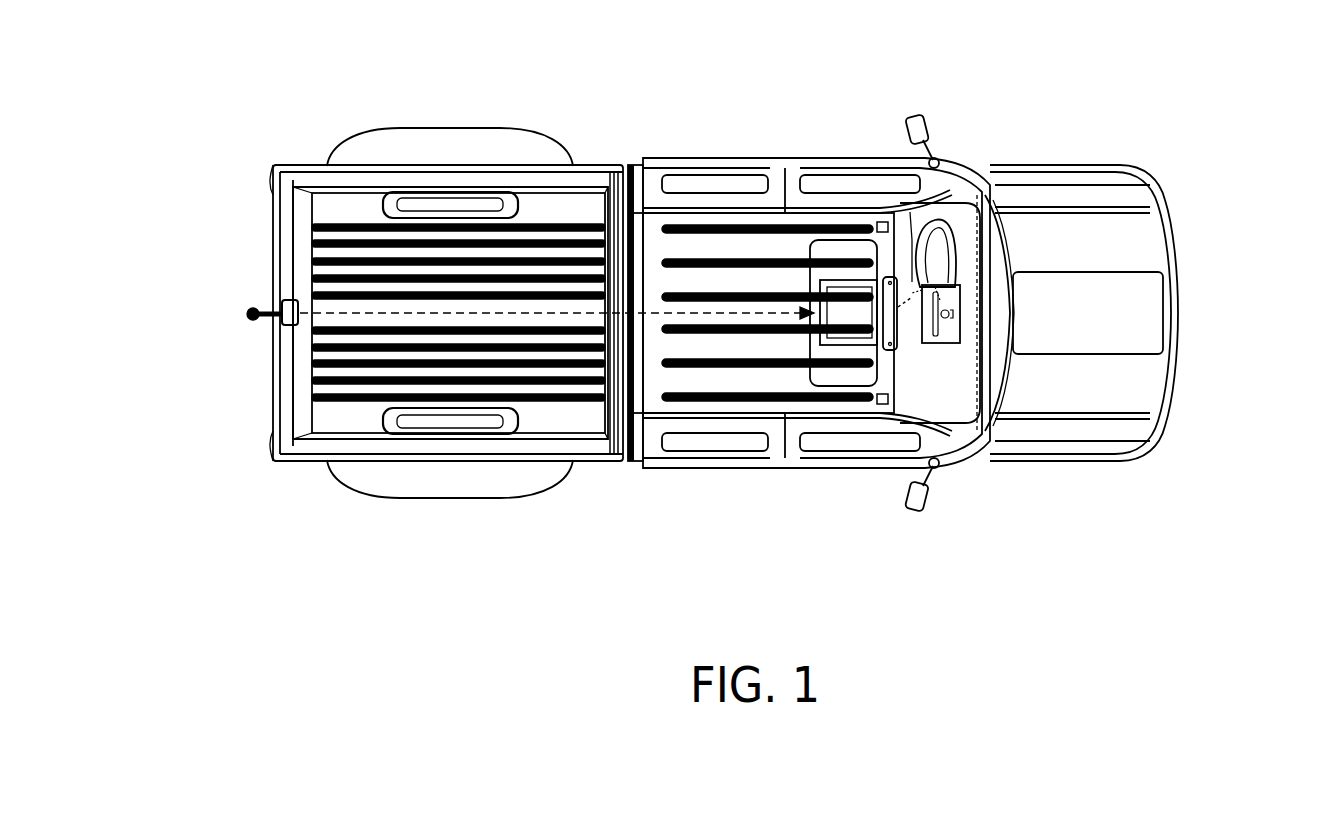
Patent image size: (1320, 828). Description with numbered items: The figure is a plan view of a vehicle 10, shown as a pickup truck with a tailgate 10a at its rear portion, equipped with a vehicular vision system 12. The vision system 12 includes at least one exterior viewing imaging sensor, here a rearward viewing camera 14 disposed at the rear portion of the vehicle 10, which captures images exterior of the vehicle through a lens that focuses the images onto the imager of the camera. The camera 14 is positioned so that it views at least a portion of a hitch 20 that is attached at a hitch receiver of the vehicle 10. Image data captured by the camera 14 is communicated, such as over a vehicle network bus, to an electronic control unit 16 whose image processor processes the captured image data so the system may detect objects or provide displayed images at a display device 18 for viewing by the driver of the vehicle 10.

The vehicle 10 is at (1173, 152).
The tailgate 10a is at (285, 262).
The vision system 12 is at (258, 398).
The rearward viewing camera 14 is at (288, 324).
The electronic control unit 16 is at (850, 290).
The display device 18 is at (947, 345).
The hitch 20 is at (250, 312).